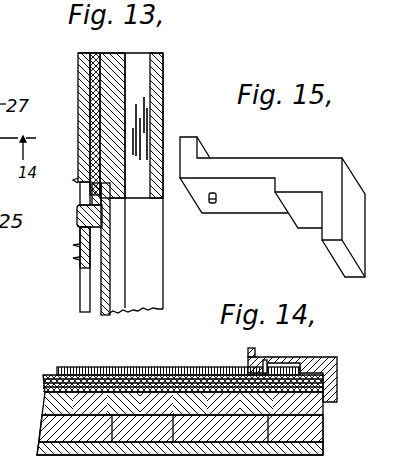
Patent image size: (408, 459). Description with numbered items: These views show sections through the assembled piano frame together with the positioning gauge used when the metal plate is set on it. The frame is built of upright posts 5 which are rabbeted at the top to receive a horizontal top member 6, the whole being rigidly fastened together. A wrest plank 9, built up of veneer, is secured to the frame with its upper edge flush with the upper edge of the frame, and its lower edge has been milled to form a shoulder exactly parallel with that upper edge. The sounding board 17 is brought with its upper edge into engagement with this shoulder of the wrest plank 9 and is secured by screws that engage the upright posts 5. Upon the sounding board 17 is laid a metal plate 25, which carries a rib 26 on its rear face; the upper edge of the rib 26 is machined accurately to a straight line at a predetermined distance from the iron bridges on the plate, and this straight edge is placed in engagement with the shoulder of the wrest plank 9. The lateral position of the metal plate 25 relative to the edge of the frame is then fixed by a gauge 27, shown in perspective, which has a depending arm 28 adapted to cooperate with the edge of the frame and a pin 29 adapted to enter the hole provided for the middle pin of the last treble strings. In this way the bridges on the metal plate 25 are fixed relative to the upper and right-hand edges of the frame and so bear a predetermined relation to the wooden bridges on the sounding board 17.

In FIG. 13, the upright posts 5 is at (157, 232).
In FIG. 13, the horizontal top member 6 is at (125, 80).
In FIG. 13, the wrest plank 9 is at (97, 103).
In FIG. 14, the wrest plank 9 is at (45, 378).
In FIG. 13, the sounding board 17 is at (110, 273).
In FIG. 13, the metal plate 25 is at (82, 170).
In FIG. 14, the metal plate 25 is at (80, 368).
In FIG. 13, the rib 26 is at (80, 215).
In FIG. 15, the gauge 27 is at (285, 168).
In FIG. 14, the gauge 27 is at (303, 355).
In FIG. 15, the depending arm 28 is at (332, 230).
In FIG. 14, the depending arm 28 is at (338, 387).
In FIG. 15, the pin 29 is at (212, 203).
In FIG. 14, the pin 29 is at (265, 360).